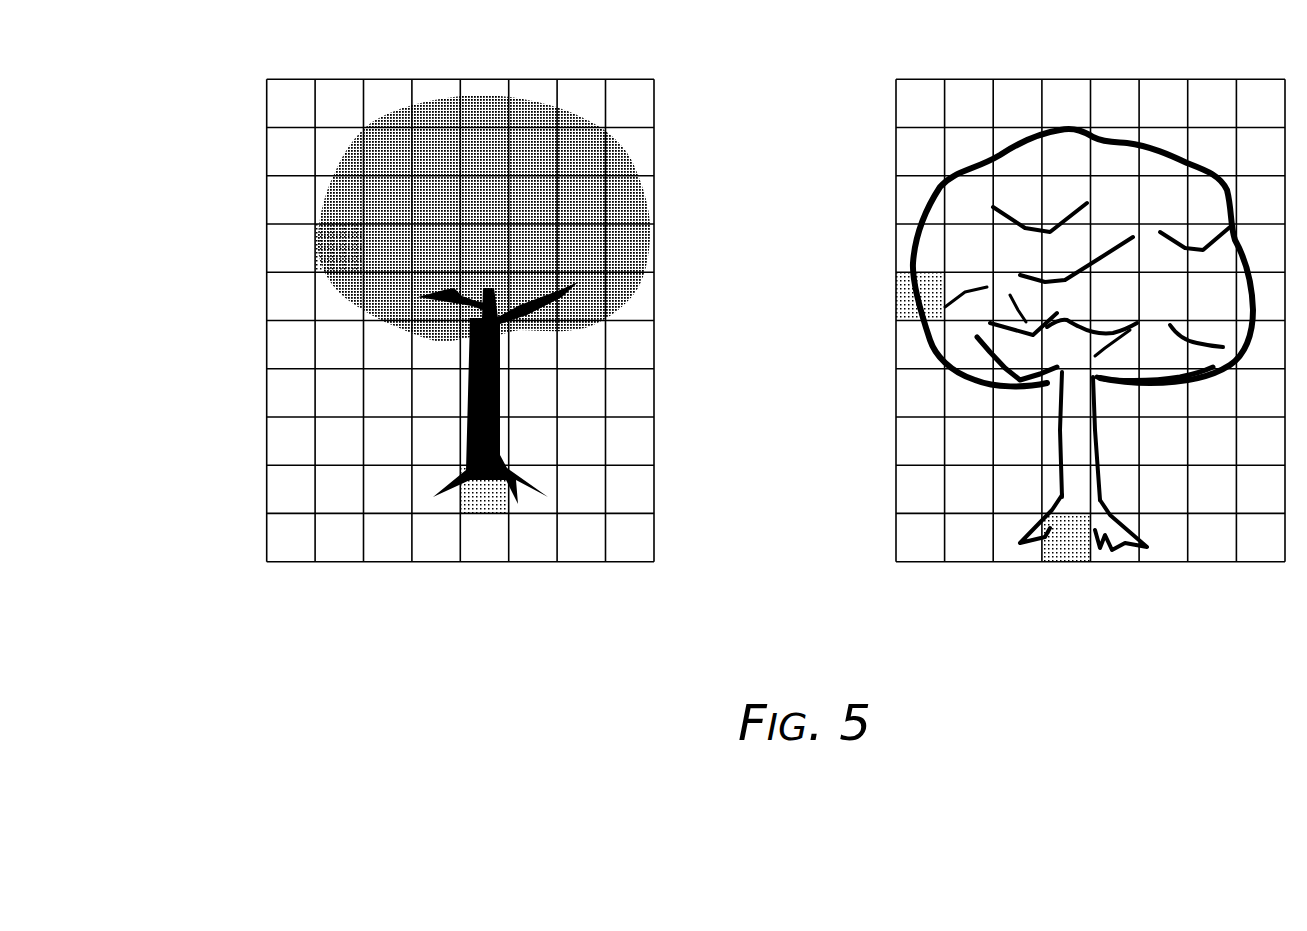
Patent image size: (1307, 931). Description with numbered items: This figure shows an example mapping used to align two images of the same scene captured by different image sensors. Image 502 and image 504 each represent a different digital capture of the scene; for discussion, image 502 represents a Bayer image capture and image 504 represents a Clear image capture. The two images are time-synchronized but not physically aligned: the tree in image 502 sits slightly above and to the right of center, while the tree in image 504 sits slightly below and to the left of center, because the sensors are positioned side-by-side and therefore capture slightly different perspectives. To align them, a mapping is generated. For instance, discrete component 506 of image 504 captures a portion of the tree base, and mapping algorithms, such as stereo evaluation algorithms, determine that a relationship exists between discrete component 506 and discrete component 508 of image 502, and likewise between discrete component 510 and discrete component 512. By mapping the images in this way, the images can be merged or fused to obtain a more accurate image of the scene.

The image 502 is at (460, 79).
The image 504 is at (1092, 79).
The discrete component 506 is at (1063, 556).
The discrete component 508 is at (472, 515).
The discrete component 510 is at (898, 308).
The discrete component 512 is at (314, 252).